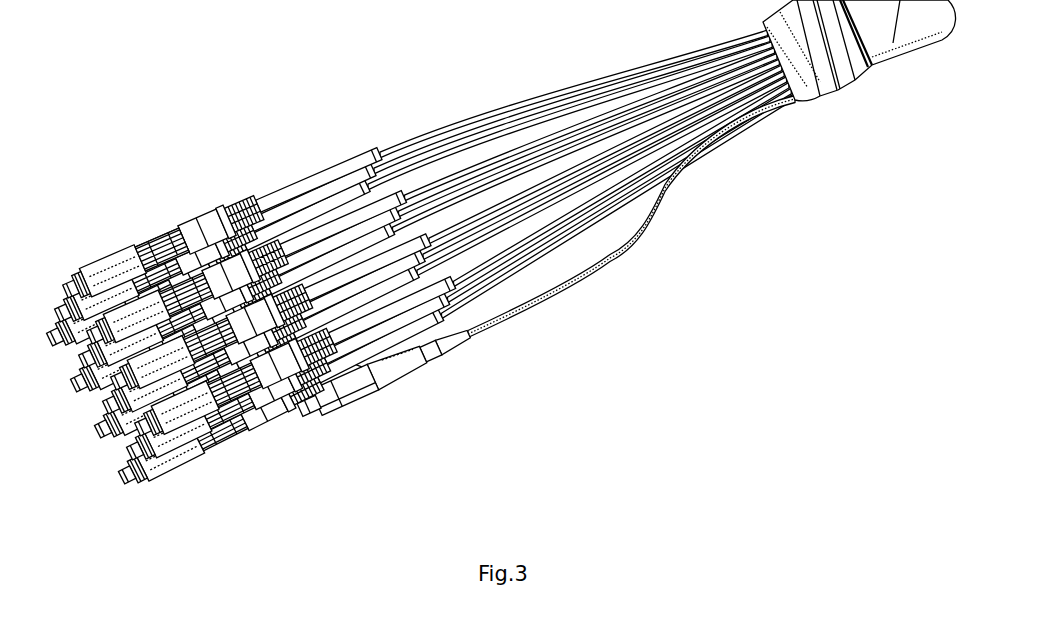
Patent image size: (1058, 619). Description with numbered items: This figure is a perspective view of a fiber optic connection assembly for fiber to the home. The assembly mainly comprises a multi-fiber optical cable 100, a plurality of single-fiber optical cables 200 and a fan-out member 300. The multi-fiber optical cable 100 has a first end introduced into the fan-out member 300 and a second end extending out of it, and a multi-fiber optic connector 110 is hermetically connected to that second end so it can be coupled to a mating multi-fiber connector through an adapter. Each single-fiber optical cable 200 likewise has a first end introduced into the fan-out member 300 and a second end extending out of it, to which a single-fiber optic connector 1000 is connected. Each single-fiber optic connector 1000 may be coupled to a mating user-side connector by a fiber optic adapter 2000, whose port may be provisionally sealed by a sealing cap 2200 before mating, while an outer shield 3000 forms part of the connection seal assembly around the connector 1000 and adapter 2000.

The multi-fiber optical cable 100 is at (633, 244).
The multi-fiber optic connector 110 is at (405, 362).
The single-fiber optical cable 200 is at (445, 123).
The fan-out member 300 is at (866, 80).
The single-fiber optic connector 1000 is at (177, 227).
The fiber optic adapter 2000 is at (103, 265).
The sealing cap 2200 is at (125, 476).
The outer shield 3000 is at (157, 248).